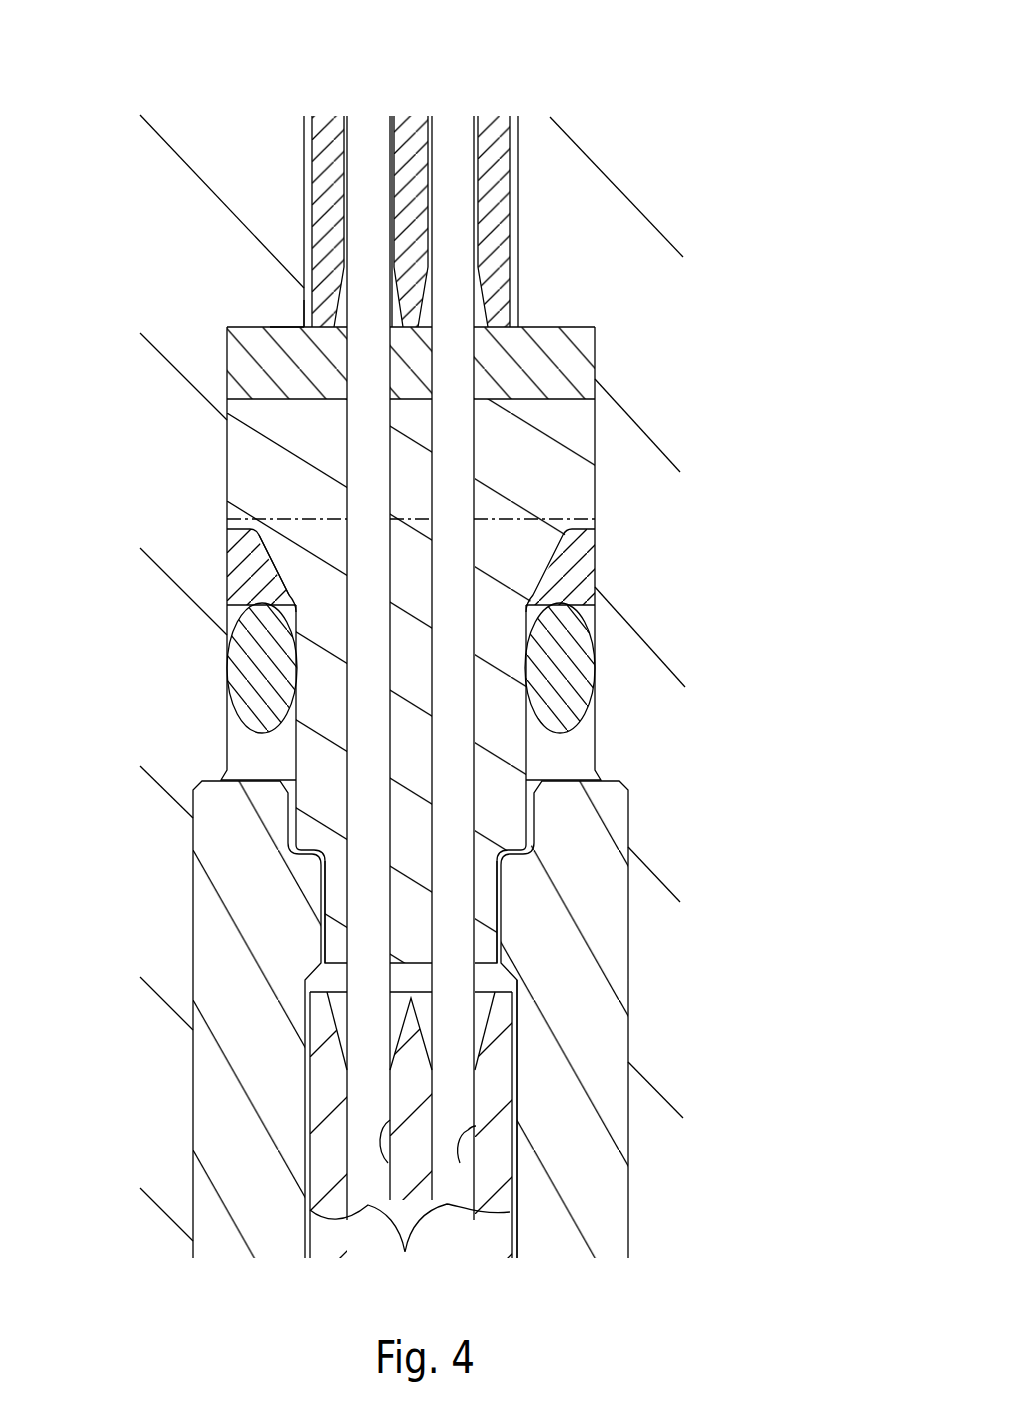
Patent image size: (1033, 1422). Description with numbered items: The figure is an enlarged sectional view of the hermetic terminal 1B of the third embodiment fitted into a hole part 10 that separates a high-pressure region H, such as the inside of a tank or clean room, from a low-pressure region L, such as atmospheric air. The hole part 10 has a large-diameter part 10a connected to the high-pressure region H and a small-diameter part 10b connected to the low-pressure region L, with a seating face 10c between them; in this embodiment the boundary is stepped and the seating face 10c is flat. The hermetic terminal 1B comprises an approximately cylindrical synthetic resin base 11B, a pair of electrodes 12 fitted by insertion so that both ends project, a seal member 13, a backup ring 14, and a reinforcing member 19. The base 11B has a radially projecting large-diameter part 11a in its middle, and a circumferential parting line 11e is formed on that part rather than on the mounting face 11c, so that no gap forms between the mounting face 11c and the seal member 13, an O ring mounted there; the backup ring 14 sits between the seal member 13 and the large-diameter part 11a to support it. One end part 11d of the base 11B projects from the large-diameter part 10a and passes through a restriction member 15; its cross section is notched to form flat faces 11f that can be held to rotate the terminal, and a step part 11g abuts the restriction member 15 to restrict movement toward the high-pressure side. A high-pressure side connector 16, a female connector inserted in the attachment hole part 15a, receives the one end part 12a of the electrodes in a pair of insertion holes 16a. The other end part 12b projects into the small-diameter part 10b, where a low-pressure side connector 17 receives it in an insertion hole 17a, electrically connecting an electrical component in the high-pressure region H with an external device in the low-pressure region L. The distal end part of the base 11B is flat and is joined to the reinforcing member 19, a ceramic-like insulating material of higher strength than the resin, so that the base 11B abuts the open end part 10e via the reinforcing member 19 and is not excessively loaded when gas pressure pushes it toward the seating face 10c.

The hermetic terminal 1B is at (555, 300).
The hole part 10 is at (515, 483).
The large-diameter part 10a is at (593, 464).
The small-diameter part 10b is at (515, 153).
The seating face 10c is at (280, 323).
The open end part 10e is at (302, 325).
The large-diameter part 11a is at (226, 483).
The base 11B is at (578, 503).
The mounting face 11c is at (595, 748).
The one end part 11d is at (497, 876).
The parting line 11e is at (270, 520).
The flat faces 11f is at (318, 886).
The step part 11g is at (299, 851).
The electrode 12 is at (362, 533).
The one end part 12a is at (410, 1243).
The other end part 12b is at (367, 123).
The seal member 13 is at (578, 673).
The backup ring 14 is at (580, 568).
The restriction member 15 is at (598, 1194).
The attachment hole part 15a is at (517, 1067).
The high-pressure side connector 16 is at (497, 1235).
The insertion holes 16a is at (390, 1120).
The low-pressure side connector 17 is at (328, 131).
The insertion hole 17a is at (392, 152).
The reinforcing member 19 is at (578, 361).
The high-pressure region H is at (490, 982).
The low-pressure region L is at (304, 208).